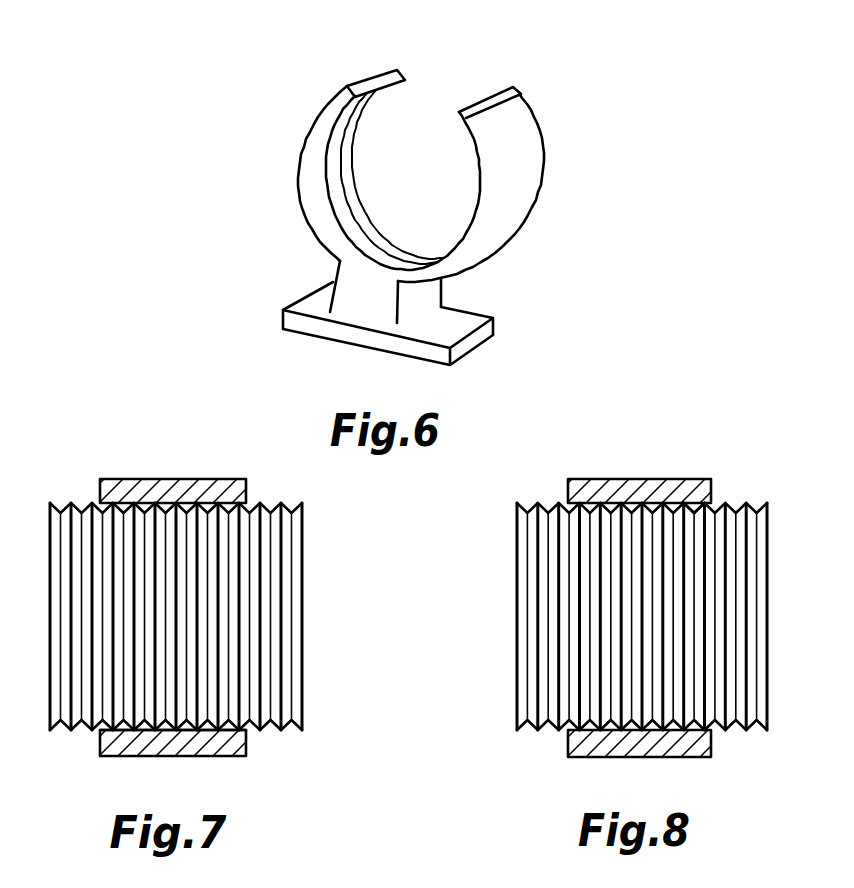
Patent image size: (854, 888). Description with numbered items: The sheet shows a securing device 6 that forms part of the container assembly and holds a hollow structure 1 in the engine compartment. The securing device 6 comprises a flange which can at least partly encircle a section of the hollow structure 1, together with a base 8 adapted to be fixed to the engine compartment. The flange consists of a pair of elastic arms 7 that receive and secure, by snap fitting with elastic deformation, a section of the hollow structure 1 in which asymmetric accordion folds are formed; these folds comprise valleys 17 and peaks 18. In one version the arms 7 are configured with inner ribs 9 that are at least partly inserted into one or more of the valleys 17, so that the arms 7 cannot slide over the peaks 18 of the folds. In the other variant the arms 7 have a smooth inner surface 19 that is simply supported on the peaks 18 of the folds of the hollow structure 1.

In FIG. 7, the hollow structure 1 is at (157, 603).
In FIG. 8, the hollow structure 1 is at (667, 617).
In FIG. 6, the securing device 6 is at (407, 192).
In FIG. 6, the elastic arms 7 is at (325, 110).
In FIG. 7, the elastic arms 7 is at (165, 480).
In FIG. 8, the elastic arms 7 is at (643, 480).
In FIG. 6, the base 8 is at (313, 307).
In FIG. 6, the inner ribs 9 is at (352, 132).
In FIG. 7, the inner ribs 9 is at (157, 730).
In FIG. 7, the valleys 17 is at (82, 510).
In FIG. 8, the valleys 17 is at (753, 723).
In FIG. 7, the peaks 18 is at (72, 503).
In FIG. 8, the peaks 18 is at (543, 727).
In FIG. 8, the smooth inner surface 19 is at (685, 505).